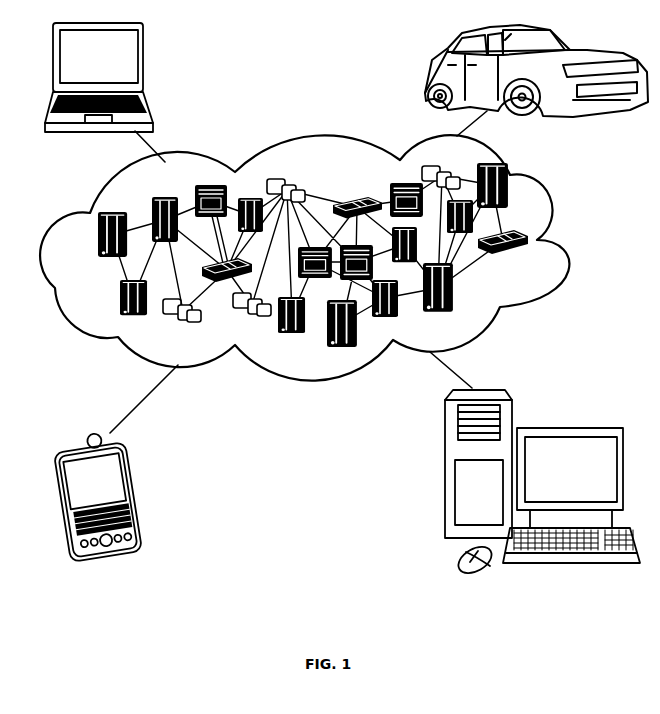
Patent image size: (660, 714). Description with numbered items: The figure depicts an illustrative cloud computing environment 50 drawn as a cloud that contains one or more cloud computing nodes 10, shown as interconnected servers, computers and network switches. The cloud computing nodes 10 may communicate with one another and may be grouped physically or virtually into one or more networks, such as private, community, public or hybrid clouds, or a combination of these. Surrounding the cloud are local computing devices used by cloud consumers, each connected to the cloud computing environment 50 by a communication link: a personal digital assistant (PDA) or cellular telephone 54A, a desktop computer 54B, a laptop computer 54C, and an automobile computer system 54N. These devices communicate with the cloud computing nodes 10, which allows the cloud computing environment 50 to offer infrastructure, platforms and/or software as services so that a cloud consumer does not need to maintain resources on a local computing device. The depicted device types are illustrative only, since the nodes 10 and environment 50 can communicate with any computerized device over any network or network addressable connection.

The cloud computing nodes 10 is at (535, 260).
The cloud computing environment 50 is at (570, 243).
The personal digital assistant (PDA) or cellular telephone 54A is at (137, 488).
The desktop computer 54B is at (567, 428).
The laptop computer 54C is at (143, 65).
The automobile computer system 54N is at (425, 75).